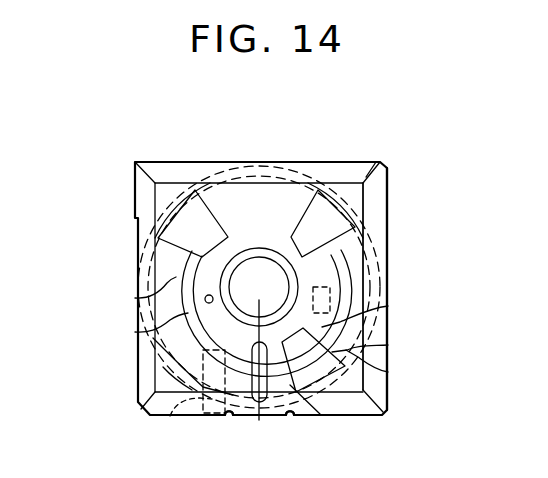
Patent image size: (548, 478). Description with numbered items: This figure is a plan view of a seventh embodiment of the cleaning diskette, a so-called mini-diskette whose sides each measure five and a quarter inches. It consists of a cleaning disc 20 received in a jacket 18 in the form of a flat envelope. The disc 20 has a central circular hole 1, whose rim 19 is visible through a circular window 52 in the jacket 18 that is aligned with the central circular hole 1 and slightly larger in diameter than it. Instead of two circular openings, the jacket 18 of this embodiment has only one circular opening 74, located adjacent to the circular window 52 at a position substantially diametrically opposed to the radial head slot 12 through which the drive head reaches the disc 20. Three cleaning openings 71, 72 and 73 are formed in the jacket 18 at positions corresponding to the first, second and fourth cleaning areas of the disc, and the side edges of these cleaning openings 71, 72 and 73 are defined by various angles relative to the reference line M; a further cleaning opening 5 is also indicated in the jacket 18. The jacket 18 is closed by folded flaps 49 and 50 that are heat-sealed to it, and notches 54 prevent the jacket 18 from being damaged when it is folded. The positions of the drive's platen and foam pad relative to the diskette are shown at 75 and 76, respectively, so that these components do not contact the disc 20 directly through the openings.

The central circular hole 1 is at (253, 257).
The cleaning opening 5 is at (200, 366).
The radial head slot 12 is at (288, 414).
The jacket 18 is at (134, 174).
The bore inner surface 19 is at (248, 272).
The cleaning disc 20 is at (152, 394).
The folded flap 49 is at (388, 180).
The folded flap 50 is at (352, 183).
The circular window 52 is at (278, 254).
The notch 54 is at (228, 414).
The cleaning opening 71 is at (355, 228).
The cleaning opening 72 is at (158, 238).
The cleaning opening 73 is at (305, 328).
The circular opening 74 is at (204, 296).
The platen position 75 is at (172, 412).
The foam pad position 76 is at (330, 287).
The reference line M is at (250, 378).